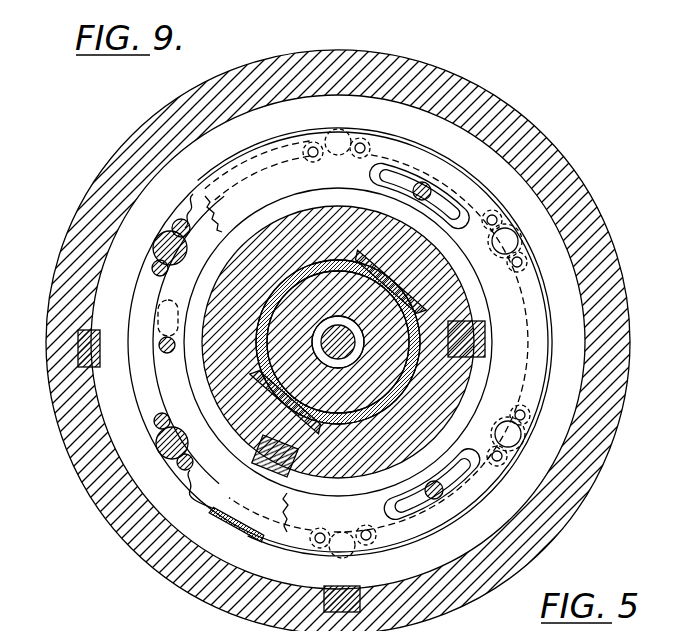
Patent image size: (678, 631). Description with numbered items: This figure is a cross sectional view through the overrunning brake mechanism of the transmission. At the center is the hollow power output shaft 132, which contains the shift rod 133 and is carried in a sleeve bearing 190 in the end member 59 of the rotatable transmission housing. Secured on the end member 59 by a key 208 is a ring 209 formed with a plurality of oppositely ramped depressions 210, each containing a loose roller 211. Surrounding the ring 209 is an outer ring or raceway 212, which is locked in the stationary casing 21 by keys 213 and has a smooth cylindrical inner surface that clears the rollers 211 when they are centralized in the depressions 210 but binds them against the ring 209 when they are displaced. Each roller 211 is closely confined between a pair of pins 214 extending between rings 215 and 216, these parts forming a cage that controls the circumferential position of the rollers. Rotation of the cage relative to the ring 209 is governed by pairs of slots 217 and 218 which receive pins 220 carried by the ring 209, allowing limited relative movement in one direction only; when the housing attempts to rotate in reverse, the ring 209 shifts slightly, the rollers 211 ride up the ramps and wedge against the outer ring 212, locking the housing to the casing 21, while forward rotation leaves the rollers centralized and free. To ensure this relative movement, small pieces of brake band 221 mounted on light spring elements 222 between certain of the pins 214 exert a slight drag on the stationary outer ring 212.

The stationary casing 21 is at (607, 228).
The end member 59 is at (460, 400).
The power output shaft 132 is at (393, 373).
The rod 133 is at (365, 350).
The sleeve bearing 190 is at (403, 307).
The key 208 is at (485, 343).
The ring 209 is at (167, 293).
The ramped depressions 210 is at (155, 273).
The rollers 211 is at (153, 241).
The ring or raceway 212 is at (192, 193).
The keys 213 is at (78, 343).
The pins 214 is at (177, 464).
The ring 215 is at (223, 200).
The ring 216 is at (138, 382).
The slots 217 is at (450, 482).
The slots 218 is at (150, 312).
The pins 220 is at (158, 350).
The pieces of brake band 221 is at (235, 522).
The spring elements 222 is at (200, 488).